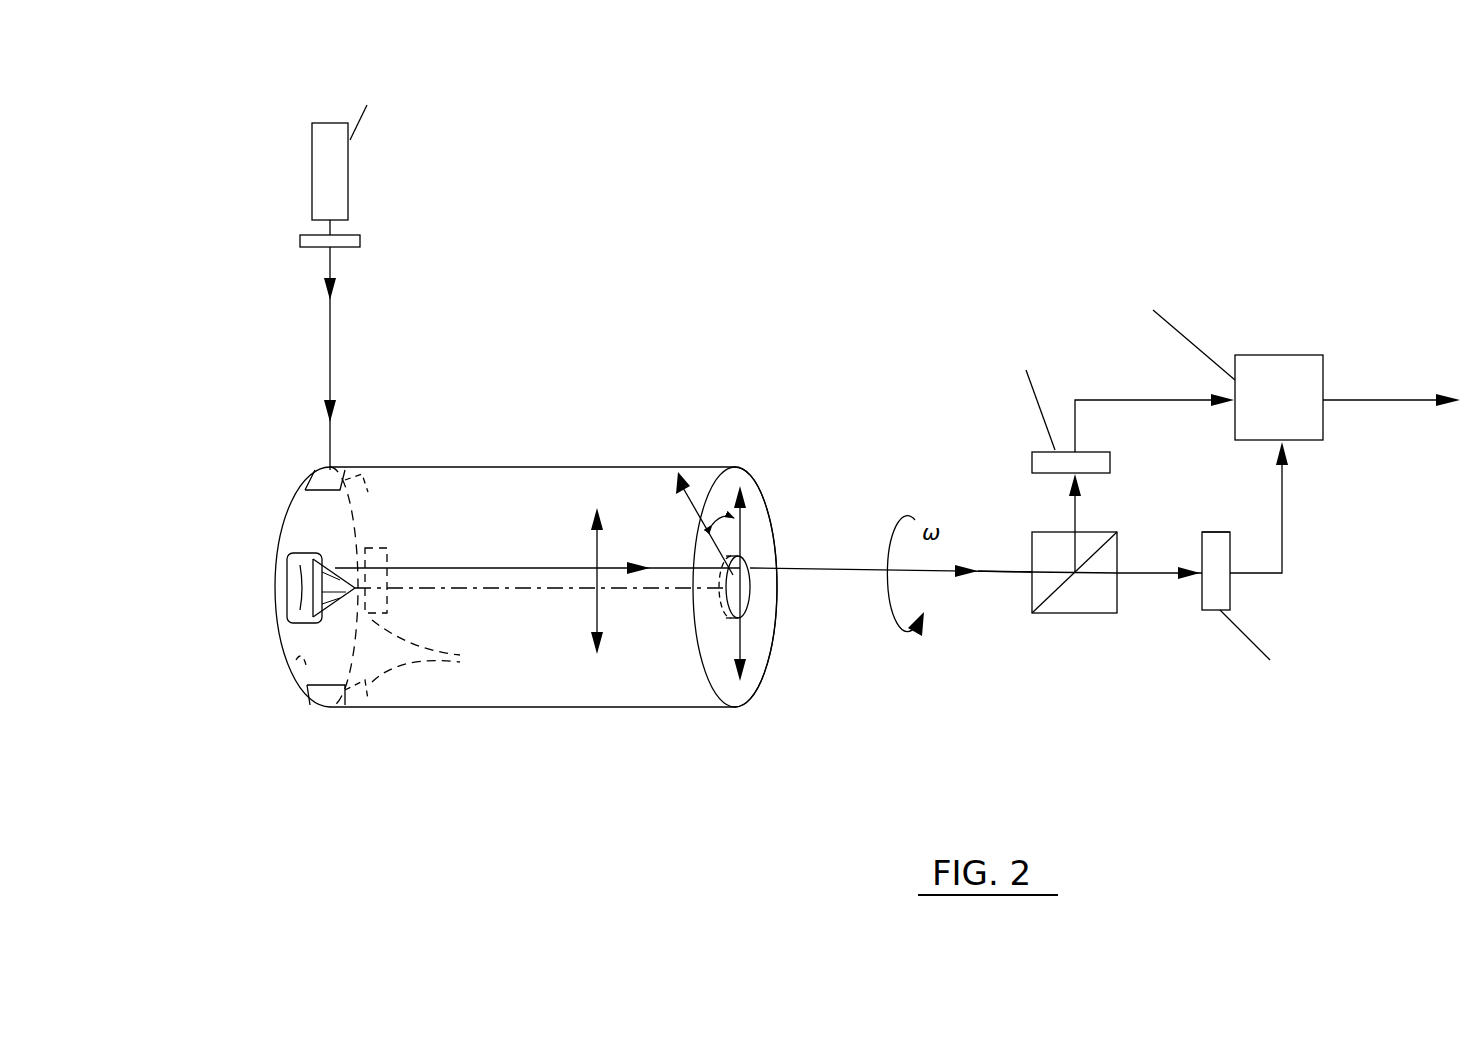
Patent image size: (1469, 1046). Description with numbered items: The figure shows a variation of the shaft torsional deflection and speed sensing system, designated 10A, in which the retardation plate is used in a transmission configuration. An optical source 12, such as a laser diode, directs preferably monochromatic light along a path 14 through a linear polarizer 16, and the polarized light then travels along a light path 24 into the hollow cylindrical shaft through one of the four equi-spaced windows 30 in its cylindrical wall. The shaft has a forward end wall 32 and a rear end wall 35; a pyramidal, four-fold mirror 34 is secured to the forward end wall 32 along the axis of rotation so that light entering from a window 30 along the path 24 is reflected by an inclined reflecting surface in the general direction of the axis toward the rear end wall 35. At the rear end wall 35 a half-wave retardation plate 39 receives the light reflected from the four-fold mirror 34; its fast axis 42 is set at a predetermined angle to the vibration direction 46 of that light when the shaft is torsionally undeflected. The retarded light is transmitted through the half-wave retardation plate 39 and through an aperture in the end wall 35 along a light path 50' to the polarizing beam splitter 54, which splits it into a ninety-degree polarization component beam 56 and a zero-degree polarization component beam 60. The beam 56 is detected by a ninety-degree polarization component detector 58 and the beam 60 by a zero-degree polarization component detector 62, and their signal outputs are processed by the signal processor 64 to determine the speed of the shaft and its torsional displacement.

The shaft torsional deflection and speed sensing system 10A is at (586, 368).
The optical source 12 is at (318, 163).
The light path 14 is at (332, 227).
The linear polarizer 16 is at (300, 239).
The light path 24 is at (333, 328).
The windows 30 is at (336, 470).
The forward end wall 32 is at (300, 648).
The four-fold mirror 34 is at (330, 565).
The rear end wall 35 is at (735, 468).
The half-wave retardation plate 39 is at (746, 566).
The fast axis 42 is at (705, 510).
The vibration direction 46 is at (595, 553).
The light path 50' is at (1030, 652).
The polarizing beam splitter 54 is at (1072, 615).
The 90° polarization component beam 56 is at (1060, 515).
The 90° polarization component detector 58 is at (1030, 463).
The 0° polarization component beam 60 is at (1140, 578).
The 0° polarization component detector 62 is at (1215, 530).
The signal processor 64 is at (1302, 363).